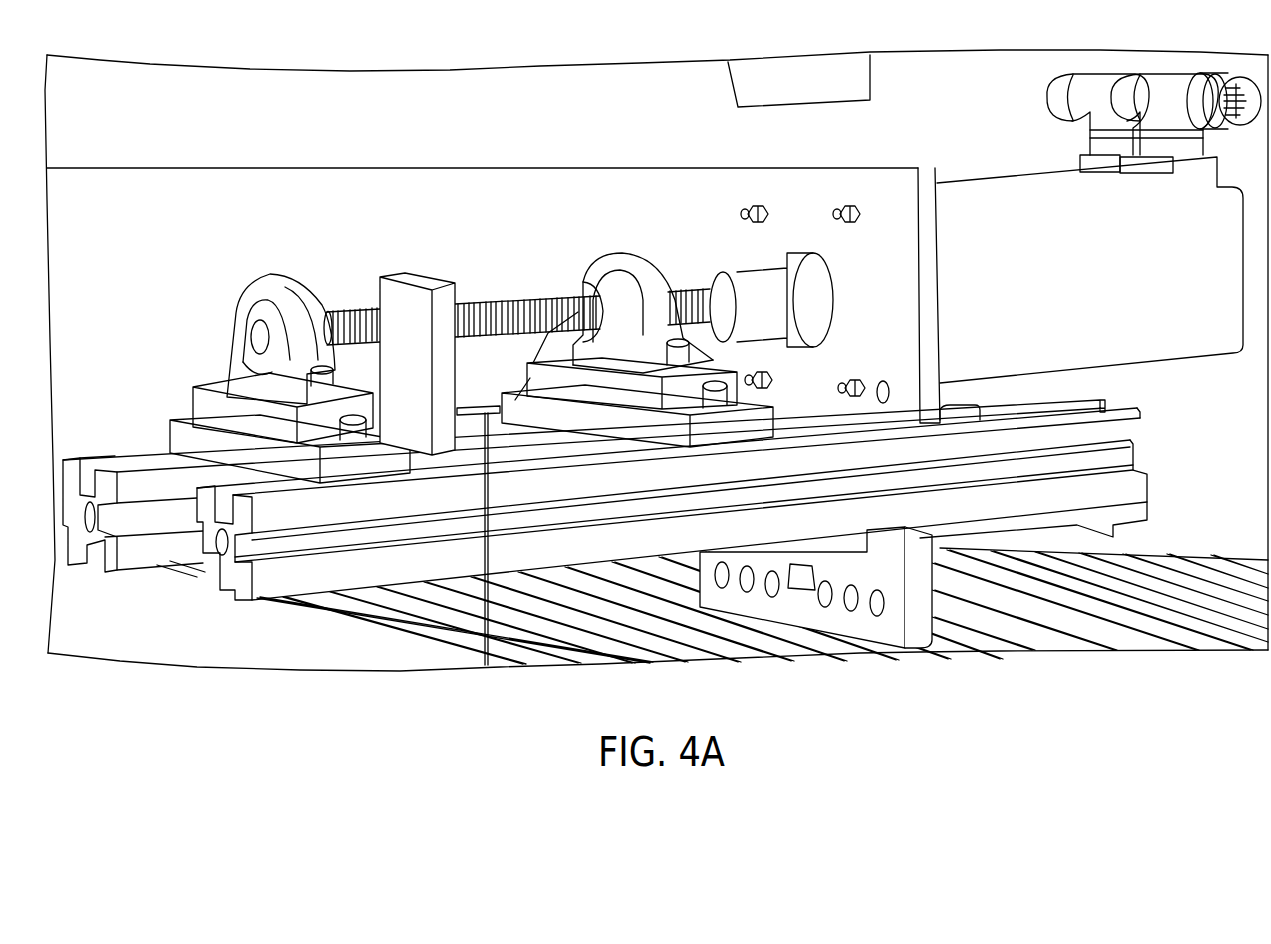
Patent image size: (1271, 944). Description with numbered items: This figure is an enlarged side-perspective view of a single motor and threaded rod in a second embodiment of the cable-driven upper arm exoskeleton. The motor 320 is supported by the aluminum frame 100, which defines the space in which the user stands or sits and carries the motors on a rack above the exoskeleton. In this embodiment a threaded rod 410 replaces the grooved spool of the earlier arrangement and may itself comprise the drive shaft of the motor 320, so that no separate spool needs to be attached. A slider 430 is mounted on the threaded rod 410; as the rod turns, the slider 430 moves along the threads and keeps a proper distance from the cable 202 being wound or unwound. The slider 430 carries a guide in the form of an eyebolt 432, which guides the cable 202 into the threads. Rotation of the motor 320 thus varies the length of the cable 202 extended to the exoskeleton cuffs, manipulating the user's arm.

The frame 100 is at (1093, 616).
The cable 202 is at (480, 618).
The motor 320 is at (978, 195).
The threaded rod 410 is at (364, 311).
The slider 430 is at (446, 330).
The eyebolt 432 is at (493, 416).